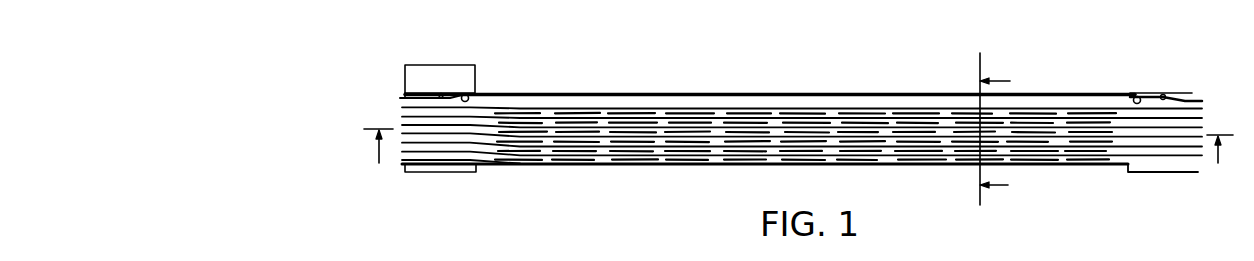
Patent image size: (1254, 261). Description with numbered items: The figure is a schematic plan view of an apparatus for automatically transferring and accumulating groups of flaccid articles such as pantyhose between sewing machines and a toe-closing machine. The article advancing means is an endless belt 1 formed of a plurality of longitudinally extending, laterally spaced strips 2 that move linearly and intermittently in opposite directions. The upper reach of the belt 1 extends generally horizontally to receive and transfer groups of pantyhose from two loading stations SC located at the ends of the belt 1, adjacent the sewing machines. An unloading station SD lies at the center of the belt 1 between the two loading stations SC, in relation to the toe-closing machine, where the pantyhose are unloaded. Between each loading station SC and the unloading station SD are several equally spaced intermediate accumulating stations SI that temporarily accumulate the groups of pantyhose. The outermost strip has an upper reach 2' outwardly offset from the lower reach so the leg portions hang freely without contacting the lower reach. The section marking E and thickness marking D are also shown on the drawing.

The endless belt 1 is at (600, 76).
The strips 2 is at (802, 132).
The upper reach of outermost strip 2' is at (770, 77).
The loading stations SC is at (1096, 73).
The unloading station SD is at (813, 73).
The intermediate accumulating stations SI is at (738, 182).
The section plane E is at (983, 129).
The thickness D is at (798, 133).